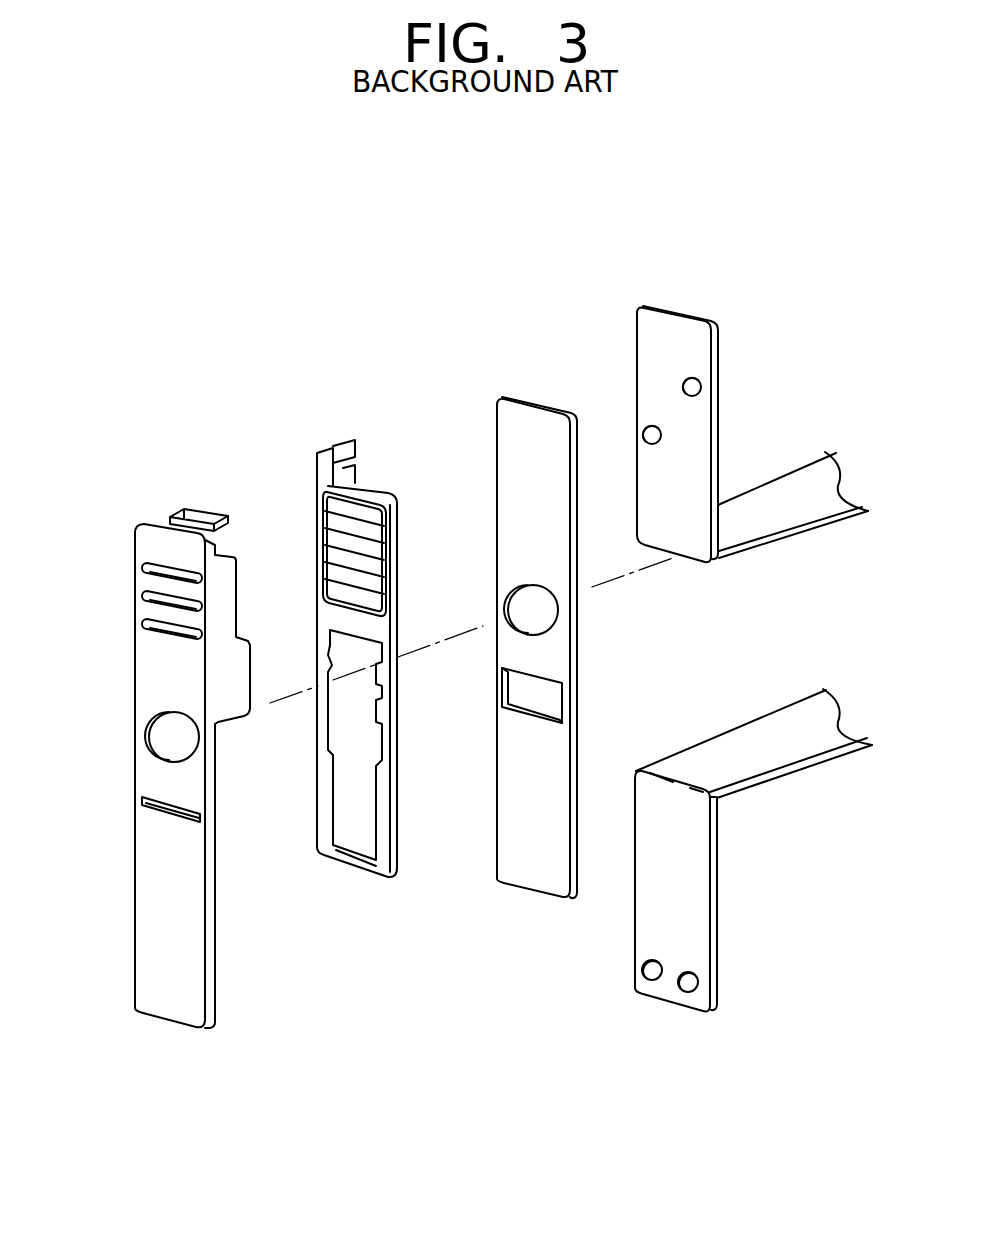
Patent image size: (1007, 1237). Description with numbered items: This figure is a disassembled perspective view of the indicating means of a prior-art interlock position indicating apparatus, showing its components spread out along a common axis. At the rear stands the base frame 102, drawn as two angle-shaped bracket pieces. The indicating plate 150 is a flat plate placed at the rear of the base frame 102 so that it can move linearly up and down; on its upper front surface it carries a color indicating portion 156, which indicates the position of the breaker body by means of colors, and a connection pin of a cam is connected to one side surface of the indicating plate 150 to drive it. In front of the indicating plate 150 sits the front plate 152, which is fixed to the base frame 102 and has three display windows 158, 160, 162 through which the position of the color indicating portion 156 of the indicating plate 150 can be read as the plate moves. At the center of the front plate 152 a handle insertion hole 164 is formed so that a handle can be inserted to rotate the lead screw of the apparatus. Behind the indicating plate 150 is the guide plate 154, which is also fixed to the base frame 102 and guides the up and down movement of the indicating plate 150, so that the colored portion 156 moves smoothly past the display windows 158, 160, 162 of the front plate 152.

The base frame 102 is at (692, 435).
The indicating plate 150 is at (364, 663).
The front plate 152 is at (140, 793).
The guide plate 154 is at (527, 873).
The color indicating portion 156 is at (362, 505).
The display window 158 is at (145, 625).
The display window 160 is at (145, 596).
The display window 162 is at (145, 565).
The handle insertion hole 164 is at (163, 736).